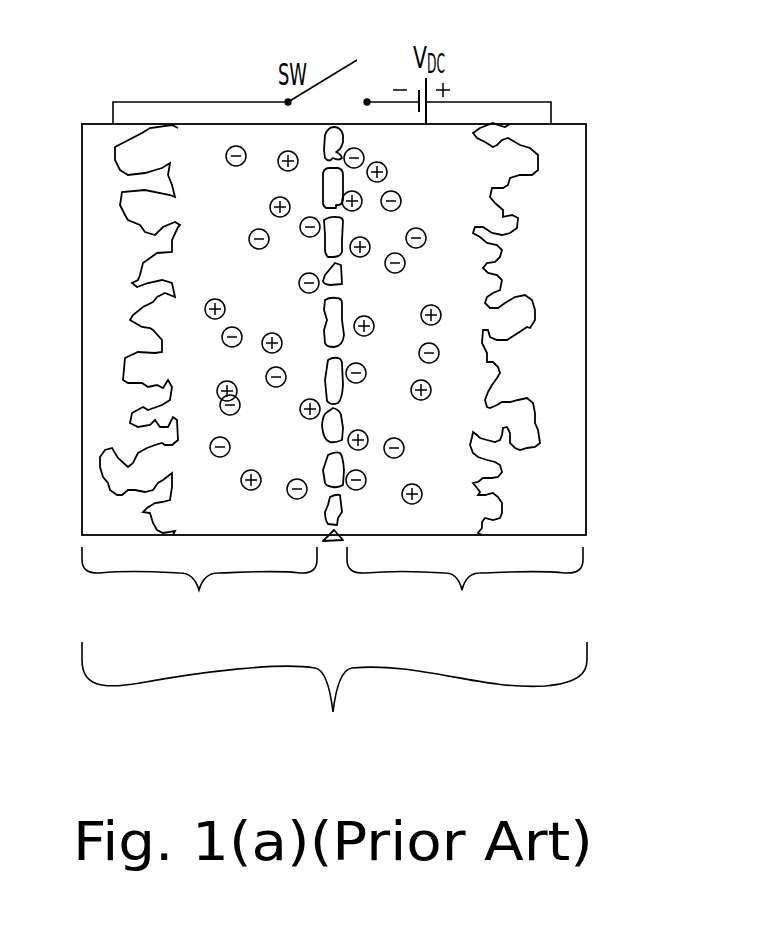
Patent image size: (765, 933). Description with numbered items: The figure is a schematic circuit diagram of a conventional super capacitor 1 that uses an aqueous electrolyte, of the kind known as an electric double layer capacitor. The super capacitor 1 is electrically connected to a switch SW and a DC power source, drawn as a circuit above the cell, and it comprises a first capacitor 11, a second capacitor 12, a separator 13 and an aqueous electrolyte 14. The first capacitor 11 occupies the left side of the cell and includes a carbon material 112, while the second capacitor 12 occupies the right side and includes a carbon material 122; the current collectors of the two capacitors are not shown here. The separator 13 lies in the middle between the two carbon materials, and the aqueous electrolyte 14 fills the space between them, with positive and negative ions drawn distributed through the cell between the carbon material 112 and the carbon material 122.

The super capacitor 1 is at (334, 697).
The first capacitor 11 is at (199, 589).
The second capacitor 12 is at (465, 590).
The separator 13 is at (328, 545).
The aqueous electrolyte 14 is at (389, 457).
The carbon material 112 is at (98, 318).
The carbon material 122 is at (560, 268).